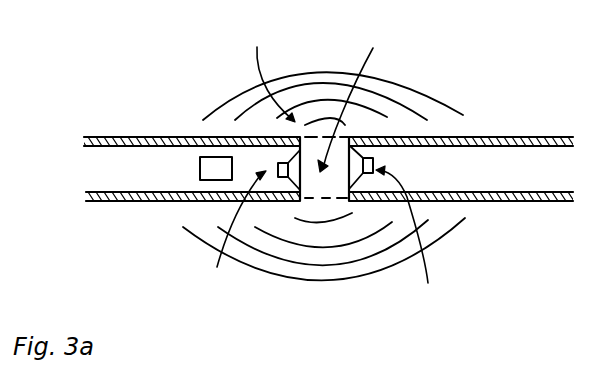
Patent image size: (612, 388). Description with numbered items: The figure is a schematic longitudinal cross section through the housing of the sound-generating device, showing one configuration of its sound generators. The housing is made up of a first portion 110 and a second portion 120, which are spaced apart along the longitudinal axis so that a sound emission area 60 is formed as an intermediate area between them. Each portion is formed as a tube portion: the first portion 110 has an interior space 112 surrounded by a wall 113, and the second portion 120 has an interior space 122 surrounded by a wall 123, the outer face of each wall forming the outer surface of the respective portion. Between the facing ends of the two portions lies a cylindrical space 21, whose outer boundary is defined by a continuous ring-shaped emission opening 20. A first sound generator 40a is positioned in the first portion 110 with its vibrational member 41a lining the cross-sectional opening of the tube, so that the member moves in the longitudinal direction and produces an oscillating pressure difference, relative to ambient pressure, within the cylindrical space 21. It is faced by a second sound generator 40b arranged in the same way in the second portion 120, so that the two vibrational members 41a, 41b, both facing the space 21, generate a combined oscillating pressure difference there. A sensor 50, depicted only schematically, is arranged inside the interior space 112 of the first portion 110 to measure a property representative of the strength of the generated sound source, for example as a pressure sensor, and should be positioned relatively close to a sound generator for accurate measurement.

The first portion 110 is at (119, 218).
The interior space 112 is at (117, 168).
The wall 113 is at (150, 140).
The second portion 120 is at (514, 222).
The interior space 122 is at (508, 175).
The wall 123 is at (554, 137).
The sensor 50 is at (213, 160).
The sound emission area 60 is at (269, 70).
The emission opening 20 is at (327, 137).
The cylindrical space 21 is at (353, 95).
The first sound generator 40a is at (221, 239).
The second sound generator 40b is at (414, 244).
The vibrational member 41a is at (283, 192).
The vibrational member 41b is at (352, 192).